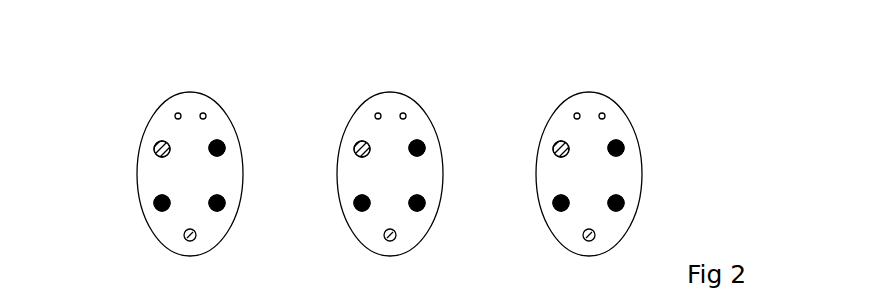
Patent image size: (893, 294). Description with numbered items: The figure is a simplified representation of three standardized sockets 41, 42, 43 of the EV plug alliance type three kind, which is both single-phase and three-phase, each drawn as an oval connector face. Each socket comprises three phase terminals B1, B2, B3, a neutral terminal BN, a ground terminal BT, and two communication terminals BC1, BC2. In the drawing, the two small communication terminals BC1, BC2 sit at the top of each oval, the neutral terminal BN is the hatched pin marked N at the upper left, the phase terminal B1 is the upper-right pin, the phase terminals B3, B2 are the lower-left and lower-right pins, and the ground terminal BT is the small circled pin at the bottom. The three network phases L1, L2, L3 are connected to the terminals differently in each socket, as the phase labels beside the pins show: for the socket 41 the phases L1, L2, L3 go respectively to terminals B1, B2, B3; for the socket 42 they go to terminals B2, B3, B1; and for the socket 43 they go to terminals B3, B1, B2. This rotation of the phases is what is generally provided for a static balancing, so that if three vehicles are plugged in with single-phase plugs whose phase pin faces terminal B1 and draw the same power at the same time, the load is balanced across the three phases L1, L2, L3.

The socket 41 is at (190, 93).
The socket 42 is at (390, 142).
The socket 43 is at (589, 142).
The communication terminal BC1 is at (178, 113).
The communication terminal BC2 is at (203, 113).
The terminal B1 is at (217, 140).
The terminal B2 is at (222, 200).
The terminal B3 is at (157, 198).
The neutral terminal BN is at (154, 149).
The ground terminal BT is at (184, 238).
The neutral N is at (347, 146).
The phase L1 is at (389, 175).
The phase L2 is at (436, 175).
The phase L3 is at (390, 175).